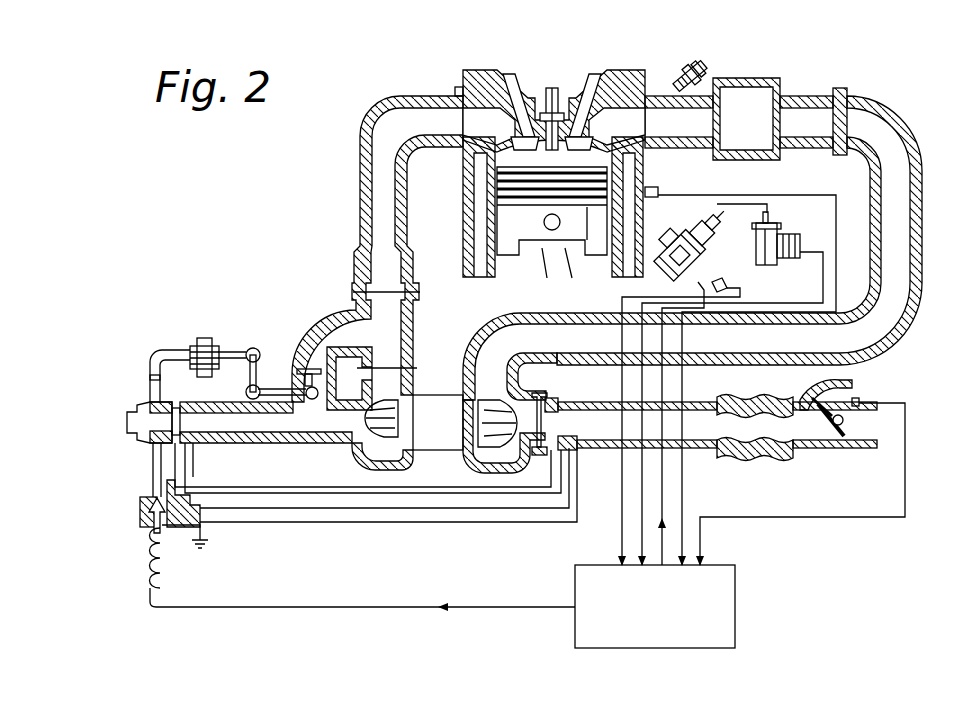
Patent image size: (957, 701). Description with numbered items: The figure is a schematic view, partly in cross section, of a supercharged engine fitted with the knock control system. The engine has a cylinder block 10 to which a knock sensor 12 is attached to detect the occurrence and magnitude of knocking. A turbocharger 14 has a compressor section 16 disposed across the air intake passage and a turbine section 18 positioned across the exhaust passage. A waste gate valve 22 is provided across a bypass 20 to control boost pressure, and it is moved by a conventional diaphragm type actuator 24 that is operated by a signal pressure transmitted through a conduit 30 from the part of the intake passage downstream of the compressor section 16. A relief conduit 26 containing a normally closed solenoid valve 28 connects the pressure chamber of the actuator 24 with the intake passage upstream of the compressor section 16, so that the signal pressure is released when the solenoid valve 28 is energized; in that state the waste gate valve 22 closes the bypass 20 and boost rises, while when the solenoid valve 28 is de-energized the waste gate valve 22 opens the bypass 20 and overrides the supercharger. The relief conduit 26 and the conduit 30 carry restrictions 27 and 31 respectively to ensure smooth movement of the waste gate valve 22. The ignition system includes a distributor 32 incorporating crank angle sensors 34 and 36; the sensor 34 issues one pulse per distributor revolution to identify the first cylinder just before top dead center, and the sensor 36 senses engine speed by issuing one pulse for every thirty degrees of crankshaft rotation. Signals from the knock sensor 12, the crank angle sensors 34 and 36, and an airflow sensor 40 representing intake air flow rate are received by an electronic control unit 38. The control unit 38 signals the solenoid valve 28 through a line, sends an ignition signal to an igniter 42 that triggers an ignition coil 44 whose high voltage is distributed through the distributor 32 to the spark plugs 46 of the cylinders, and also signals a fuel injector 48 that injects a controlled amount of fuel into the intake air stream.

The cylinder block 10 is at (457, 186).
The knock sensor 12 is at (664, 181).
The turbocharger 14 is at (443, 395).
The compressor section 16 is at (520, 466).
The turbine section 18 is at (356, 462).
The bypass 20 is at (323, 333).
The waste gate valve 22 is at (299, 351).
The diaphragm type actuator 24 is at (212, 338).
The relief conduit 26 is at (361, 527).
The restriction 27 is at (148, 380).
The solenoid valve 28 is at (142, 516).
The conduit 30 is at (272, 487).
The restriction 31 is at (430, 493).
The distributor 32 is at (667, 236).
The crank angle sensor 34 is at (738, 253).
The crank angle sensor 36 is at (737, 289).
The electronic control unit 38 is at (744, 607).
The airflow sensor 40 is at (860, 406).
The igniter 42 is at (782, 226).
The ignition coil 44 is at (818, 256).
The spark plug 46 is at (551, 88).
The fuel injector 48 is at (690, 70).